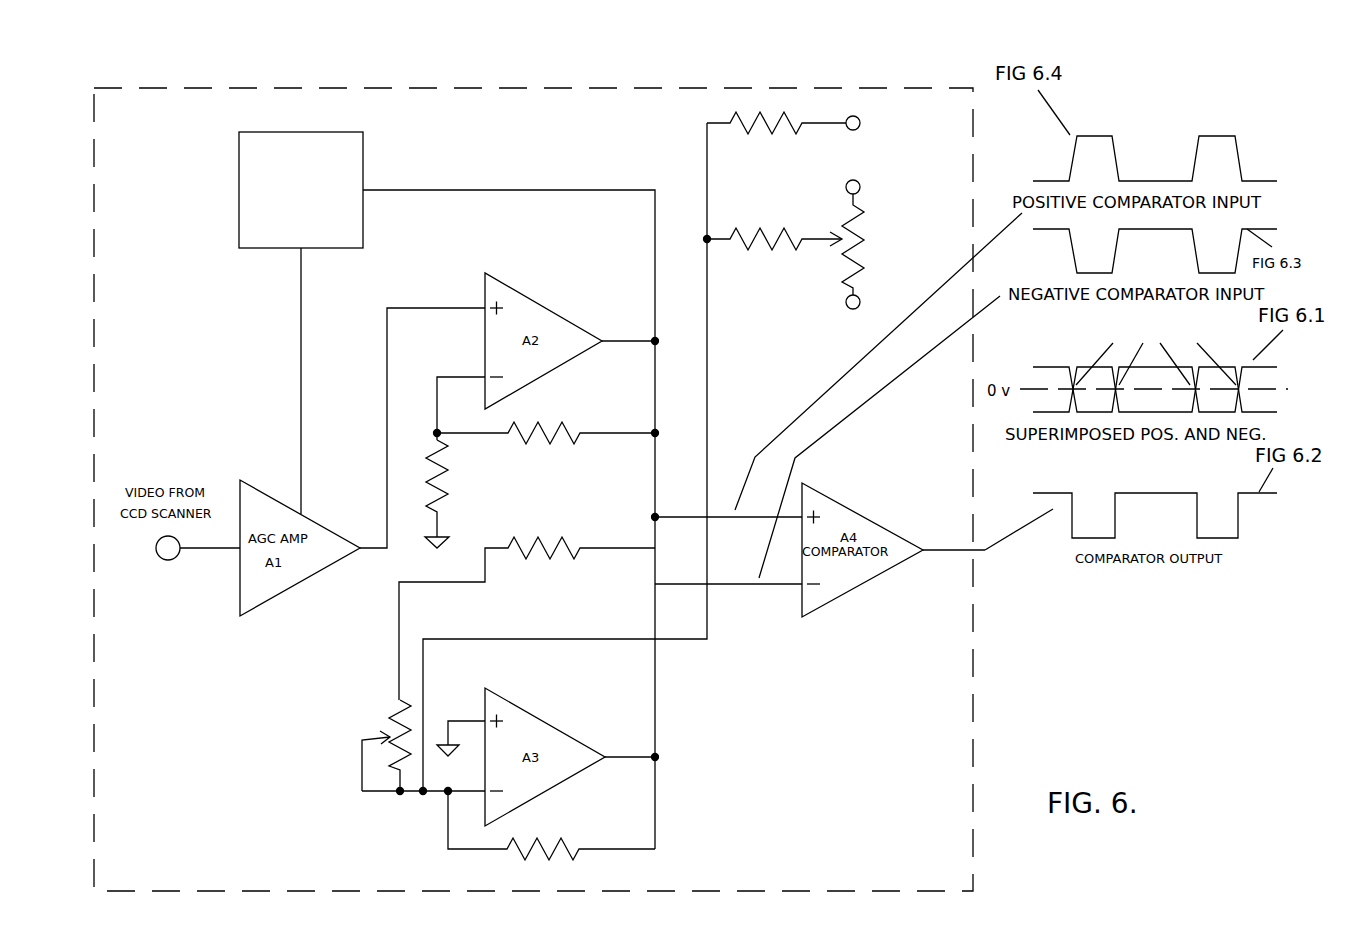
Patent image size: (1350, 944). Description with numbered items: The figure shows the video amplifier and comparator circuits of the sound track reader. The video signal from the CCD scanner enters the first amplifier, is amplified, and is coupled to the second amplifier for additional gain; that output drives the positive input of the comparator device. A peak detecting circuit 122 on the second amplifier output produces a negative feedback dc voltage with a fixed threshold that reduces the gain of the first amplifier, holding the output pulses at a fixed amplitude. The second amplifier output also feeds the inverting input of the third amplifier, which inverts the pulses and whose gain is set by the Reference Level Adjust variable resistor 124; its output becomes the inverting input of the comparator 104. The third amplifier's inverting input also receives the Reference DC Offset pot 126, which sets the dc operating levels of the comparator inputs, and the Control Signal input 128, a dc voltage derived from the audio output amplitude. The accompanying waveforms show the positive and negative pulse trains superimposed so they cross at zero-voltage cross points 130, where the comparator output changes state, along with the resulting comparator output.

In FIG. 6, the comparator 104 is at (530, 80).
In FIG. 6, the peak detecting circuit 122 is at (368, 161).
In FIG. 6, the gain adjusting variable resistor 124 is at (380, 720).
In FIG. 6, the dc offset adjust 126 is at (880, 208).
In FIG. 6, the control signal input 128 is at (872, 122).
In FIG. 6.1, the cross points 130 is at (1098, 335).